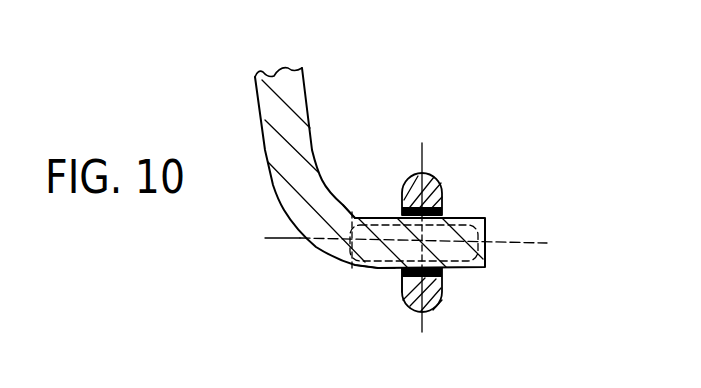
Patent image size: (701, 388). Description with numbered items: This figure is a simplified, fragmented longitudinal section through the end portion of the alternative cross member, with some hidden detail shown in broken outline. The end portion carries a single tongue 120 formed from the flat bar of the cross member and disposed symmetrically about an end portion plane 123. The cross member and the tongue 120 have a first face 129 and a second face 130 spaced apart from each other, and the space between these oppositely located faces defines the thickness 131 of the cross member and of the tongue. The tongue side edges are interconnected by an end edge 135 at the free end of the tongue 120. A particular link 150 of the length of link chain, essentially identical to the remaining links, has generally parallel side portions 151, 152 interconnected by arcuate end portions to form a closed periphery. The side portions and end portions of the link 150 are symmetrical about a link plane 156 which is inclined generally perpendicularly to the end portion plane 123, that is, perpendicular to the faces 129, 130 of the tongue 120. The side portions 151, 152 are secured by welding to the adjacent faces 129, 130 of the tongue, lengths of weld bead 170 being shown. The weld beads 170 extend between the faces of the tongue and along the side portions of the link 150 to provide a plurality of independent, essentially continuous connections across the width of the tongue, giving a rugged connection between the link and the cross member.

The tongue 120 is at (502, 262).
The end portion plane 123 is at (548, 243).
The first face 129 is at (372, 216).
The second face 130 is at (381, 270).
The thickness 131 is at (230, 108).
The end edge 135 is at (489, 221).
The particular link 150 is at (390, 303).
The side portion 151 is at (405, 176).
The side portion 152 is at (436, 304).
The link plane 156 is at (424, 150).
The weld bead 170 is at (441, 210).